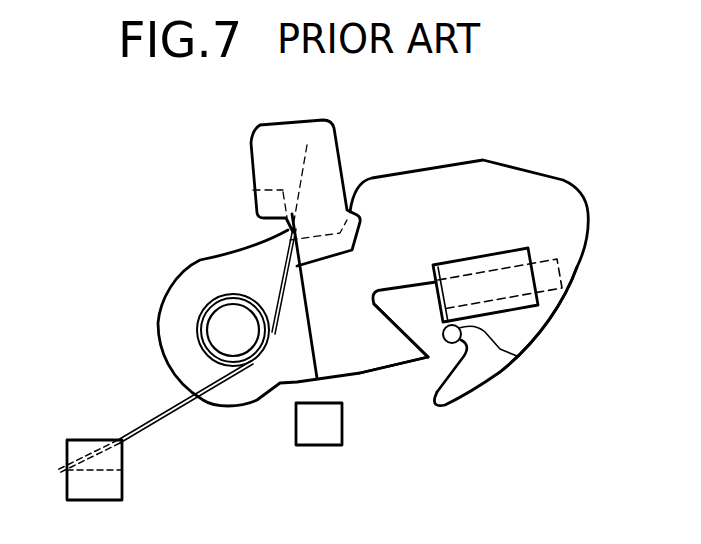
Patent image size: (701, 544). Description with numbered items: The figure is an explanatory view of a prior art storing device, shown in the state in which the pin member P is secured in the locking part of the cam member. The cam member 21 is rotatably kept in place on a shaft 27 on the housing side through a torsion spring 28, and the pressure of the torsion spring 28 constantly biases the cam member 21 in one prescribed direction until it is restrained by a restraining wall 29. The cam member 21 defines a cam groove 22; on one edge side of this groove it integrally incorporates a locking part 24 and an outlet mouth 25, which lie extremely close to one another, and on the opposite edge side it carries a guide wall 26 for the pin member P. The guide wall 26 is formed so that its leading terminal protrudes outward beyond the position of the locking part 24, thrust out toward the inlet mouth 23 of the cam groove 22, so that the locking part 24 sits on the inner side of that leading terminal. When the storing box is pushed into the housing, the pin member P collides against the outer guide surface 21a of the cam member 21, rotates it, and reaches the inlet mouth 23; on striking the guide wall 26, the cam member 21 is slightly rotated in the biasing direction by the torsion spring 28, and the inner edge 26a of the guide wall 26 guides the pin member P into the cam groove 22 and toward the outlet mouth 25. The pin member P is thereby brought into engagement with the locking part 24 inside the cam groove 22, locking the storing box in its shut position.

The cam member 21 is at (527, 207).
The outer guide surface 21a is at (563, 302).
The cam groove 22 is at (391, 317).
The inlet mouth 23 is at (425, 385).
The locking part 24 is at (517, 356).
The outlet mouth 25 is at (430, 263).
The guide wall 26 is at (405, 357).
The inner edge 26a is at (400, 328).
The shaft 27 is at (225, 332).
The torsion spring 28 is at (167, 417).
The restraining wall 29 is at (315, 430).
The pin member P is at (463, 347).